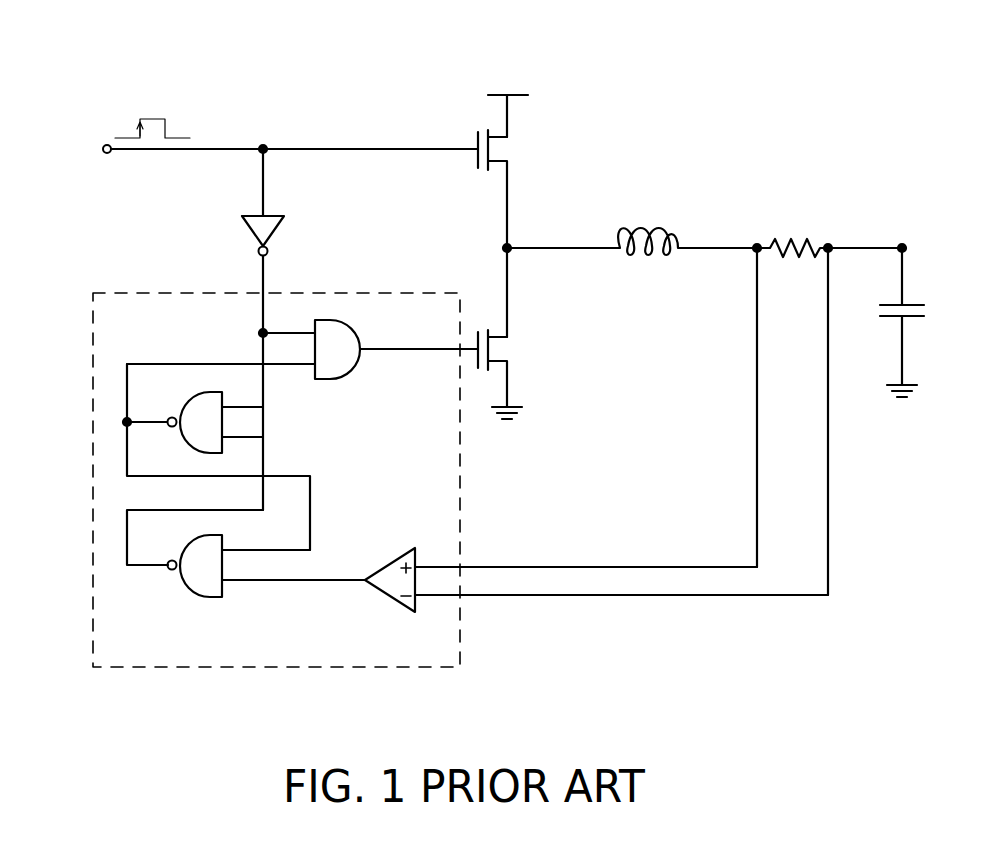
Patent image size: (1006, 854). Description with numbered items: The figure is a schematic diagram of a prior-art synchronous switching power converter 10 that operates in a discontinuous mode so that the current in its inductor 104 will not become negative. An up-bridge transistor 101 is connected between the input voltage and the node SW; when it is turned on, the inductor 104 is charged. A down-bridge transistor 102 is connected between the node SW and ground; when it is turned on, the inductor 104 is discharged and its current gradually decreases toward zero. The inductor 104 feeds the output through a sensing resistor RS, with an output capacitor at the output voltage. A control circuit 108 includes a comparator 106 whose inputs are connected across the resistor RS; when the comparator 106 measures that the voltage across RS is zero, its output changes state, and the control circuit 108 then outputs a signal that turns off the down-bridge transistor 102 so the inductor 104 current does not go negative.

The synchronous switching power converter 10 is at (514, 378).
The up-bridge transistor 101 is at (502, 150).
The down-bridge transistor 102 is at (502, 350).
The inductor 104 is at (644, 234).
The comparator 106 is at (392, 602).
The control circuit 108 is at (255, 668).